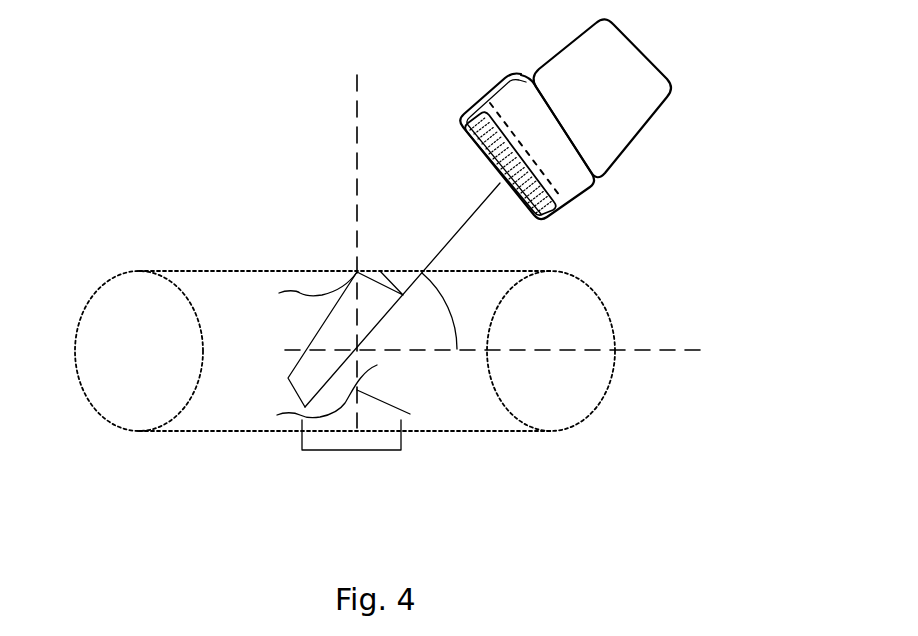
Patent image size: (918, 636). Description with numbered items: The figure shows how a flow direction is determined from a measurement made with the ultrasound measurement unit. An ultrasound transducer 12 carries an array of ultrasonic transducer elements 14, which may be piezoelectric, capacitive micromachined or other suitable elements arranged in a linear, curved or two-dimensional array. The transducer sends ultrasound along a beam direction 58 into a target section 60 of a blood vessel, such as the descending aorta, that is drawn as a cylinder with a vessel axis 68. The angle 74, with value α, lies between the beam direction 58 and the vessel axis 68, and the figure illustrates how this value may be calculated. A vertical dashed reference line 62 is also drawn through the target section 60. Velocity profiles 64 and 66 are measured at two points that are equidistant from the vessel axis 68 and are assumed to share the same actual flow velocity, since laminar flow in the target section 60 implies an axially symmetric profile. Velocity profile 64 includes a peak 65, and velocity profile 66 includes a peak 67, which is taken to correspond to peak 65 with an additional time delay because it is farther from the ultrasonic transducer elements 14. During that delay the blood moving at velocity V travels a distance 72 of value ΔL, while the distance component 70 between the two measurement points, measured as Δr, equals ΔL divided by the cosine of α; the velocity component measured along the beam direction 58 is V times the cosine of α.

The ultrasound transducer 12 is at (548, 63).
The ultrasonic transducer elements 14 is at (497, 150).
The beam direction 58 is at (458, 232).
The target section 60 is at (205, 270).
The vertical reference axis 62 is at (357, 172).
The velocity profile 64 is at (312, 293).
The peak 65 is at (357, 271).
The velocity profile 66 is at (381, 403).
The peak 67 is at (377, 365).
The vessel axis 68 is at (657, 350).
The distance component 70 is at (288, 378).
The distance 72 is at (323, 452).
The angle 74 is at (452, 300).